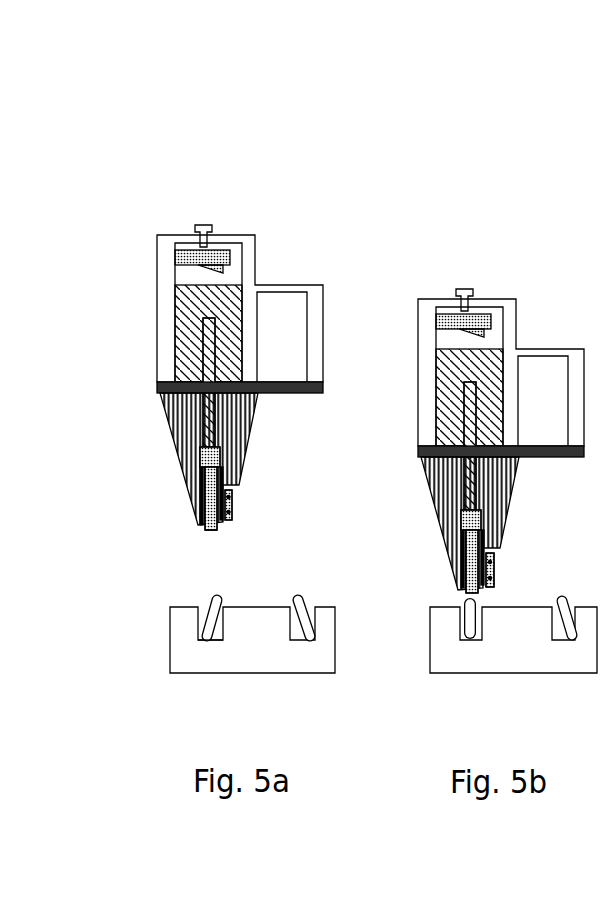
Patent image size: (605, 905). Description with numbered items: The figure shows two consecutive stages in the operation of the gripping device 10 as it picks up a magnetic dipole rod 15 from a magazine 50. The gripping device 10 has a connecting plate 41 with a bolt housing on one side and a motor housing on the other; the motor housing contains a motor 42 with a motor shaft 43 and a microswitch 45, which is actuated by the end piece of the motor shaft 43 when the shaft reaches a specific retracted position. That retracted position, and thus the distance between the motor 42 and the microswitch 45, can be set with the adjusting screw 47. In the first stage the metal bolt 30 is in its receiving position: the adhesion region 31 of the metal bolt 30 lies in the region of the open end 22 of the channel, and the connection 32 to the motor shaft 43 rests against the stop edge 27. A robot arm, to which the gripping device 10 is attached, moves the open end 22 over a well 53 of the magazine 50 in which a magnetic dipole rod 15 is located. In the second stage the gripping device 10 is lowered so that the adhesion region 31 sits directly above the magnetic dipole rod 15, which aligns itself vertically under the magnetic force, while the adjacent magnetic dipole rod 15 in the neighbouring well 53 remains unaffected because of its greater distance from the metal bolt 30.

In FIG. 5A, the gripping device 10 is at (216, 175).
In FIG. 5A, the magnetic dipole rod 15 is at (205, 623).
In FIG. 5B, the magnetic dipole rod 15 is at (467, 622).
In FIG. 5A, the open end 22 is at (200, 523).
In FIG. 5A, the stop edge 27 is at (243, 460).
In FIG. 5A, the metal bolt 30 is at (198, 479).
In FIG. 5A, the adhesion region 31 is at (222, 530).
In FIG. 5B, the adhesion region 31 is at (465, 591).
In FIG. 5A, the connection 32 is at (202, 452).
In FIG. 5A, the connecting plate 41 is at (157, 387).
In FIG. 5A, the motor 42 is at (232, 325).
In FIG. 5A, the motor shaft 43 is at (205, 345).
In FIG. 5A, the microswitch 45 is at (208, 260).
In FIG. 5A, the adjusting screw 47 is at (200, 228).
In FIG. 5A, the magazine 50 is at (305, 660).
In FIG. 5A, the well 53 is at (214, 632).